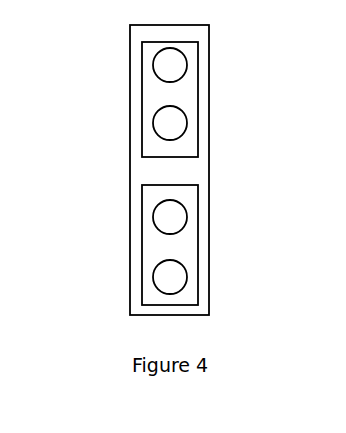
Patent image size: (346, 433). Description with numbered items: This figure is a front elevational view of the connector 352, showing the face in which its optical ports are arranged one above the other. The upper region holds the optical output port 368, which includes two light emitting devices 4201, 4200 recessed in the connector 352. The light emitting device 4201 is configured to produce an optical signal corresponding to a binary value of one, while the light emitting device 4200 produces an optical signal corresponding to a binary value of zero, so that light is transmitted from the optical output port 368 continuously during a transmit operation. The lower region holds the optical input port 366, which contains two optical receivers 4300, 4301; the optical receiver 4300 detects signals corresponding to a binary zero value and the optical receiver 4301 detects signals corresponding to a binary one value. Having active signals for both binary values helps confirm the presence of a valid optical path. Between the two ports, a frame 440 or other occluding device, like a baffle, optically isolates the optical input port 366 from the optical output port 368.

The connector 352 is at (210, 168).
The optical output port 368 is at (198, 97).
The optical input port 366 is at (198, 244).
The light emitting device 4201 is at (153, 65).
The light emitting device 4200 is at (153, 123).
The optical receiver 4300 is at (153, 217).
The optical receiver 4301 is at (153, 277).
The frame 440 is at (134, 171).